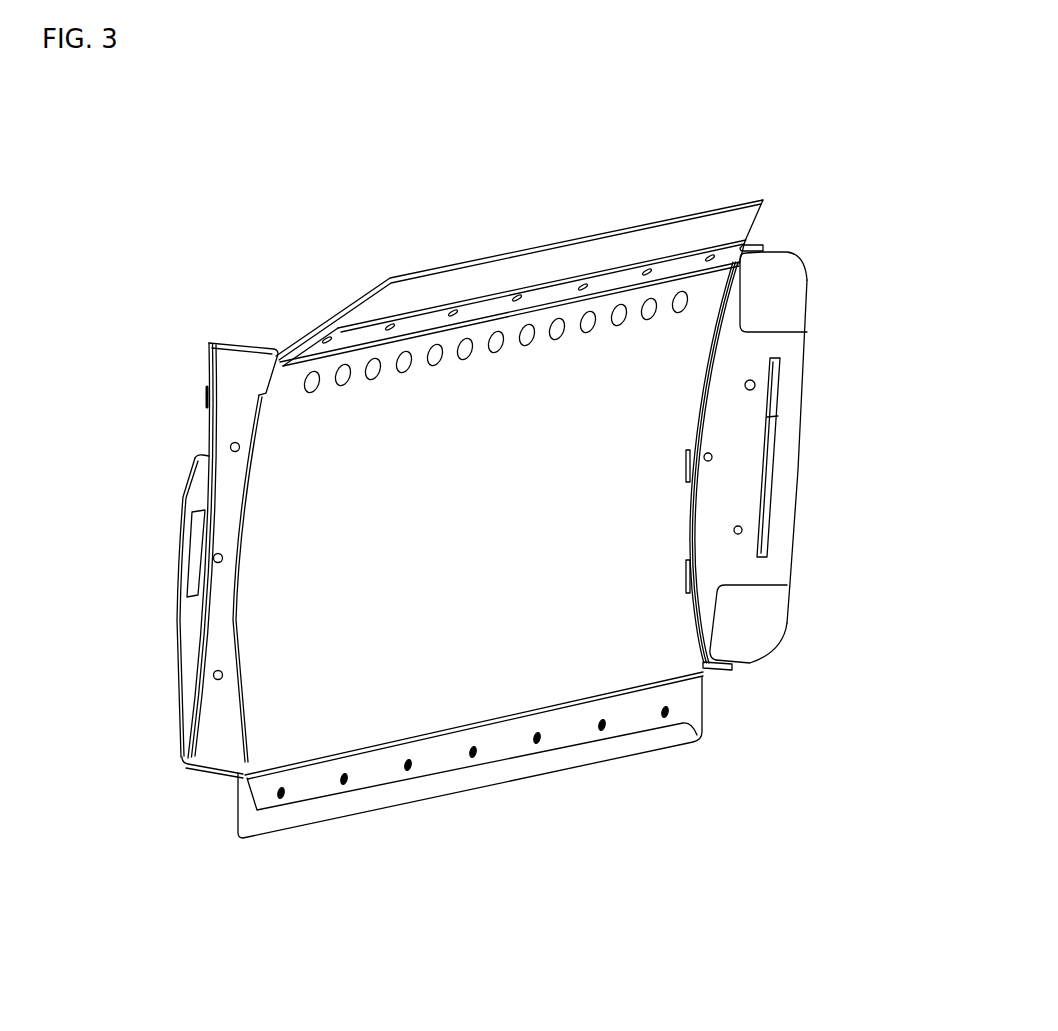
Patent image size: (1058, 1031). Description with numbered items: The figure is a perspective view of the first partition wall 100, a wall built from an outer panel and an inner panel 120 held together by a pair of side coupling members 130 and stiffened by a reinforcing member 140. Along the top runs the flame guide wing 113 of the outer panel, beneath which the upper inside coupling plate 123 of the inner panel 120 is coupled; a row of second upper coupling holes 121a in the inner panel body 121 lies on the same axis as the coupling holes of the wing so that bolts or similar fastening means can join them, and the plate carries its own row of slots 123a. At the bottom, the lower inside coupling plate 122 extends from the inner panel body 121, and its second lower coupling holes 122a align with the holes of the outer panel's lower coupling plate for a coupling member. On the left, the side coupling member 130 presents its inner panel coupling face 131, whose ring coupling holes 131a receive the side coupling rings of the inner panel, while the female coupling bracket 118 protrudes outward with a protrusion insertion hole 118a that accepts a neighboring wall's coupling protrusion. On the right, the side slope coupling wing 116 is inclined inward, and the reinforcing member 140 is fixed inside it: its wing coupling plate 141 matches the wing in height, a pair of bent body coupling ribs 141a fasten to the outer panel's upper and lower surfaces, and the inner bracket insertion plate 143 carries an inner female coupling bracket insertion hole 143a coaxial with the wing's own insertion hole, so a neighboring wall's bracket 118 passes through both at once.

The first partition wall 100 is at (275, 204).
The flame guide wing 113 is at (440, 268).
The side slope coupling wing 116 is at (777, 296).
The female coupling bracket 118 is at (190, 474).
The protrusion insertion hole 118a is at (190, 544).
The inner panel 120 is at (587, 858).
The inner panel body 121 is at (463, 670).
The second upper coupling holes 121a is at (540, 326).
The lower inside coupling plate 122 is at (572, 730).
The second lower coupling holes 122a is at (410, 770).
The upper inside coupling plate 123 is at (684, 262).
The strip slots 123a is at (650, 270).
The side coupling members 130 is at (170, 787).
The inner panel coupling face 131 is at (208, 726).
The ring coupling holes 131a is at (214, 676).
The reinforcing member 140 is at (818, 657).
The wing coupling plate 141 is at (720, 508).
The body coupling ribs 141a is at (713, 662).
The inner bracket insertion plate 143 is at (787, 444).
The inner female coupling bracket insertion hole 143a is at (777, 465).